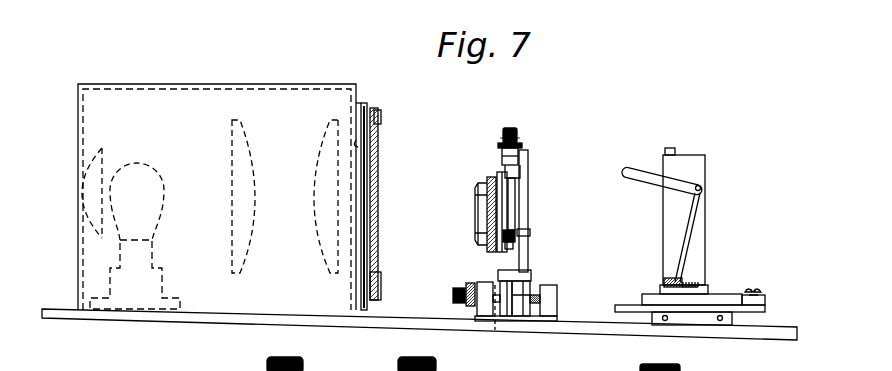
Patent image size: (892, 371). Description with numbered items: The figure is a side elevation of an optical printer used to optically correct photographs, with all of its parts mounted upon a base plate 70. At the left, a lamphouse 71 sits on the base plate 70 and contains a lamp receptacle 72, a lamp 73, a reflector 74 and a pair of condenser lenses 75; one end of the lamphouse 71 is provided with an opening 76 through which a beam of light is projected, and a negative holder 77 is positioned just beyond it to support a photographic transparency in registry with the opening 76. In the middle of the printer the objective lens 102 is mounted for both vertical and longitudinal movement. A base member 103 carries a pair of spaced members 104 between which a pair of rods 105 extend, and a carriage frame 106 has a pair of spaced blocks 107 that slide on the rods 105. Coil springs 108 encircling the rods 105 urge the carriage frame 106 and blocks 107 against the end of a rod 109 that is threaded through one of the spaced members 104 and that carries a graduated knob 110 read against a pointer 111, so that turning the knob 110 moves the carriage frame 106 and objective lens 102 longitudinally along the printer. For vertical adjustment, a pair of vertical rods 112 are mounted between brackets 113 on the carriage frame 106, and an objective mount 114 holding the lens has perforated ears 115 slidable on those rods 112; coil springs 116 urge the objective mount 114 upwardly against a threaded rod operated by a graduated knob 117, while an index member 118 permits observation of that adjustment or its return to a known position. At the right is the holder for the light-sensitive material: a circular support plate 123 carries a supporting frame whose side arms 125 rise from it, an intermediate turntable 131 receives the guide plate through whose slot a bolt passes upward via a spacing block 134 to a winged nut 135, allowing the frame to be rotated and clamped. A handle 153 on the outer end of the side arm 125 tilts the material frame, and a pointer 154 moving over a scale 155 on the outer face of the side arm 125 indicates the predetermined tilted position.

The base plate 70 is at (404, 324).
The lamphouse 71 is at (205, 84).
The lamp receptacle 72 is at (160, 280).
The lamp 73 is at (137, 165).
The reflector 74 is at (84, 186).
The condenser lenses 75 is at (320, 146).
The opening 76 is at (358, 105).
The negative holder 77 is at (378, 108).
The objective lens 102 is at (486, 178).
The base member 103 is at (548, 320).
The spaced members 104 is at (552, 300).
The rods 105 is at (497, 285).
The carriage frame 106 is at (527, 208).
The spaced blocks 107 is at (522, 305).
The coil springs 108 is at (536, 295).
The rod 109 is at (500, 307).
The graduated knob 110 is at (471, 285).
The pointer 111 is at (472, 283).
The vertical rods 112 is at (520, 162).
The brackets 113 is at (503, 240).
The objective mount 114 is at (500, 210).
The perforated ears 115 is at (523, 172).
The coil springs 116 is at (526, 233).
The graduated knob 117 is at (503, 138).
The index member 118 is at (518, 144).
The circular support plate 123 is at (617, 305).
The side arms 125 is at (700, 251).
The intermediate turntable 131 is at (716, 297).
The spacing block 134 is at (763, 303).
The winged nut 135 is at (761, 291).
The handle 153 is at (650, 156).
The pointer 154 is at (690, 228).
The scale 155 is at (671, 280).